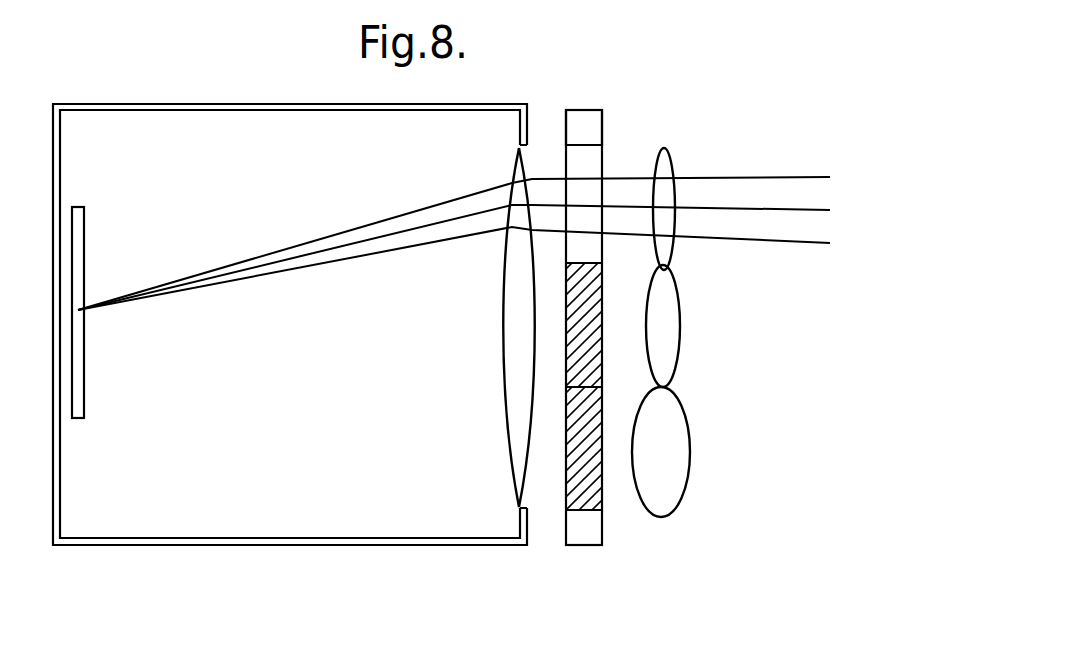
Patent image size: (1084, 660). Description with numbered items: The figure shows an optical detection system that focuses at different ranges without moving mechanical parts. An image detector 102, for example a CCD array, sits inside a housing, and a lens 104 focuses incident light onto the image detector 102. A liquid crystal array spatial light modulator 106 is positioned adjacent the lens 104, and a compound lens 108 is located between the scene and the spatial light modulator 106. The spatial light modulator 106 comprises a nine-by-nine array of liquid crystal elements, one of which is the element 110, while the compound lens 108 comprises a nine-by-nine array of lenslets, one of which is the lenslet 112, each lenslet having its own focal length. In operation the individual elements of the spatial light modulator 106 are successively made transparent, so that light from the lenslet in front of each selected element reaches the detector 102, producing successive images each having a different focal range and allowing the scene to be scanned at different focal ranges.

The image detector 102 is at (84, 418).
The lens 104 is at (514, 500).
The liquid crystal array spatial light modulator 106 is at (583, 535).
The compound lens 108 is at (670, 515).
The liquid crystal element 110 is at (603, 157).
The lenslet 112 is at (672, 160).